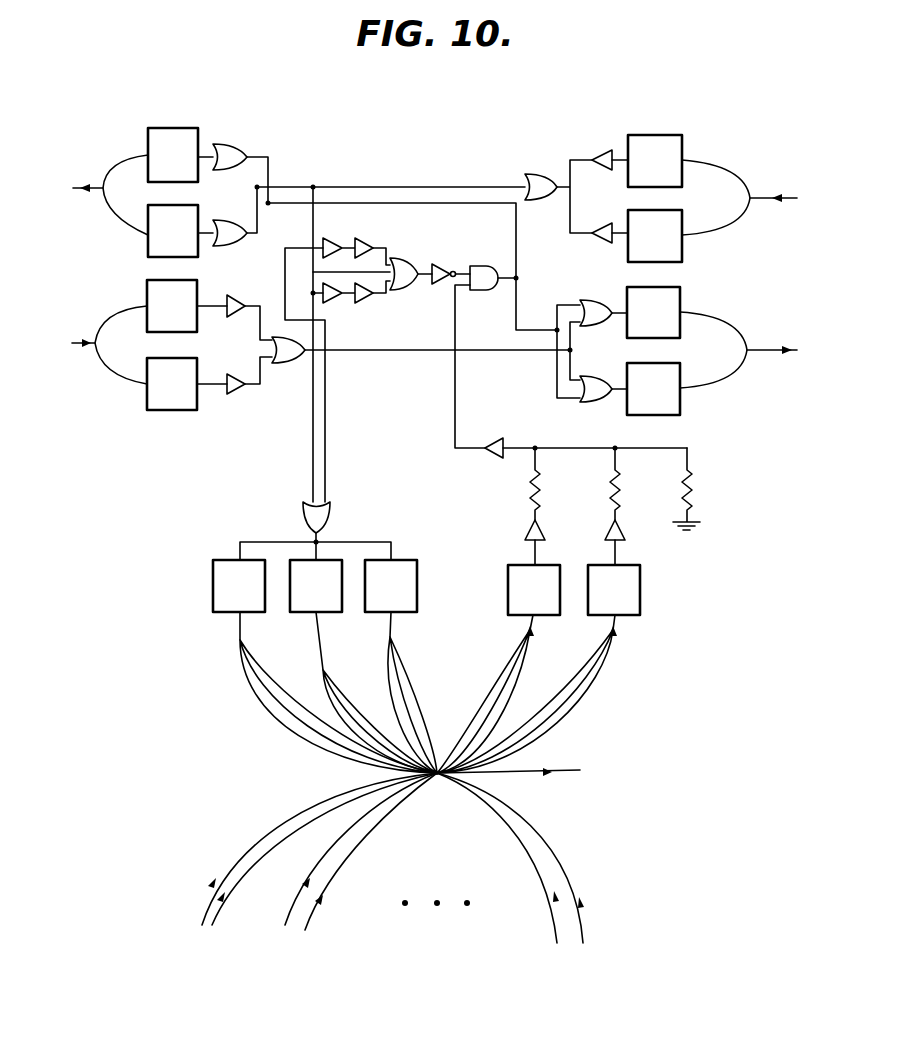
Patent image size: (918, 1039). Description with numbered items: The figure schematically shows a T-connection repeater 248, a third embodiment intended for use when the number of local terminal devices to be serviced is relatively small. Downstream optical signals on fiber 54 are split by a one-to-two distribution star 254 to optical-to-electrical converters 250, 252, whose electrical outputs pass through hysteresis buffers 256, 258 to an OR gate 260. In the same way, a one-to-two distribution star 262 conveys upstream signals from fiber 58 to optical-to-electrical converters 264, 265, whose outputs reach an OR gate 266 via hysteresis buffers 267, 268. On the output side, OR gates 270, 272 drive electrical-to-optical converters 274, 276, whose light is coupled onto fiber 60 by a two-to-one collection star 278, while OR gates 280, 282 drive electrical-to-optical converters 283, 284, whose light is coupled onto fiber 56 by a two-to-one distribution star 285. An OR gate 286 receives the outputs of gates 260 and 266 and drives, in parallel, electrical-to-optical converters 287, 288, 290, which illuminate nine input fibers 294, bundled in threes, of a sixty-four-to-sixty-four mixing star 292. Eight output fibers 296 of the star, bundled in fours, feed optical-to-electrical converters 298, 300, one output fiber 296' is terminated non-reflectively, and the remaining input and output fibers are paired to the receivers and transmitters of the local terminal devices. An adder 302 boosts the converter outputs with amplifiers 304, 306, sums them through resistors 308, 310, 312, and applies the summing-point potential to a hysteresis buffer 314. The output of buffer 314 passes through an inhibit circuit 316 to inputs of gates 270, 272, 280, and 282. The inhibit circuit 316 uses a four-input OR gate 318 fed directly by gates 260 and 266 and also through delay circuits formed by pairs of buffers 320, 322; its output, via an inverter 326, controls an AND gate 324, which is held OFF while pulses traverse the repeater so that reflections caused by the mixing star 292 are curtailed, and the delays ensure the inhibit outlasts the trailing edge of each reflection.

The fiber 54 is at (789, 190).
The fiber 56 is at (84, 188).
The fiber 58 is at (73, 352).
The fiber 60 is at (763, 356).
The T-connection repeater 248 is at (167, 658).
The optical-to-electrical converter 250 is at (660, 135).
The optical-to-electrical converter 252 is at (628, 256).
The 1-to-2 distribution star 254 is at (757, 215).
The buffer 256 is at (597, 153).
The buffer 258 is at (603, 226).
The OR gate 260 is at (532, 180).
The 1-to-2 distribution star 262 is at (96, 322).
The optical-to-electrical converter 264 is at (195, 280).
The optical-to-electrical converter 265 is at (150, 412).
The OR gate 266 is at (290, 363).
The buffer 267 is at (237, 298).
The buffer 268 is at (233, 375).
The OR gate 270 is at (603, 300).
The OR gate 272 is at (590, 402).
The electrical-to-optical converter 274 is at (680, 298).
The electrical-to-optical converter 276 is at (680, 416).
The 2-to-1 collection star 278 is at (758, 331).
The OR gate 280 is at (230, 222).
The OR gate 282 is at (233, 146).
The electrical-to-optical converter 283 is at (148, 247).
The electrical-to-optical converter 284 is at (170, 128).
The 2-to-1 distribution star 285 is at (101, 204).
The OR gate 286 is at (331, 513).
The electrical-to-optical converter 287 is at (212, 583).
The electrical-to-optical converter 288 is at (300, 613).
The electrical-to-optical converter 290 is at (417, 597).
The 64-to-64 mixing star 292 is at (280, 765).
The input fibers 294 is at (253, 697).
The output fibers 296 is at (420, 779).
The output fiber 296' is at (520, 790).
The optical-to-electrical converter 298 is at (508, 577).
The optical-to-electrical converter 300 is at (640, 580).
The adder 302 is at (585, 489).
The amplifier 304 is at (527, 527).
The amplifier 306 is at (607, 532).
The resistor 308 is at (540, 483).
The resistor 310 is at (622, 490).
The resistor 312 is at (698, 490).
The buffer 314 is at (495, 437).
The inhibit circuit 316 is at (455, 251).
The 4-input OR gate 318 is at (403, 258).
The buffers 320 is at (362, 240).
The buffers 322 is at (360, 305).
The AND gate 324 is at (480, 291).
The inverter 326 is at (442, 285).